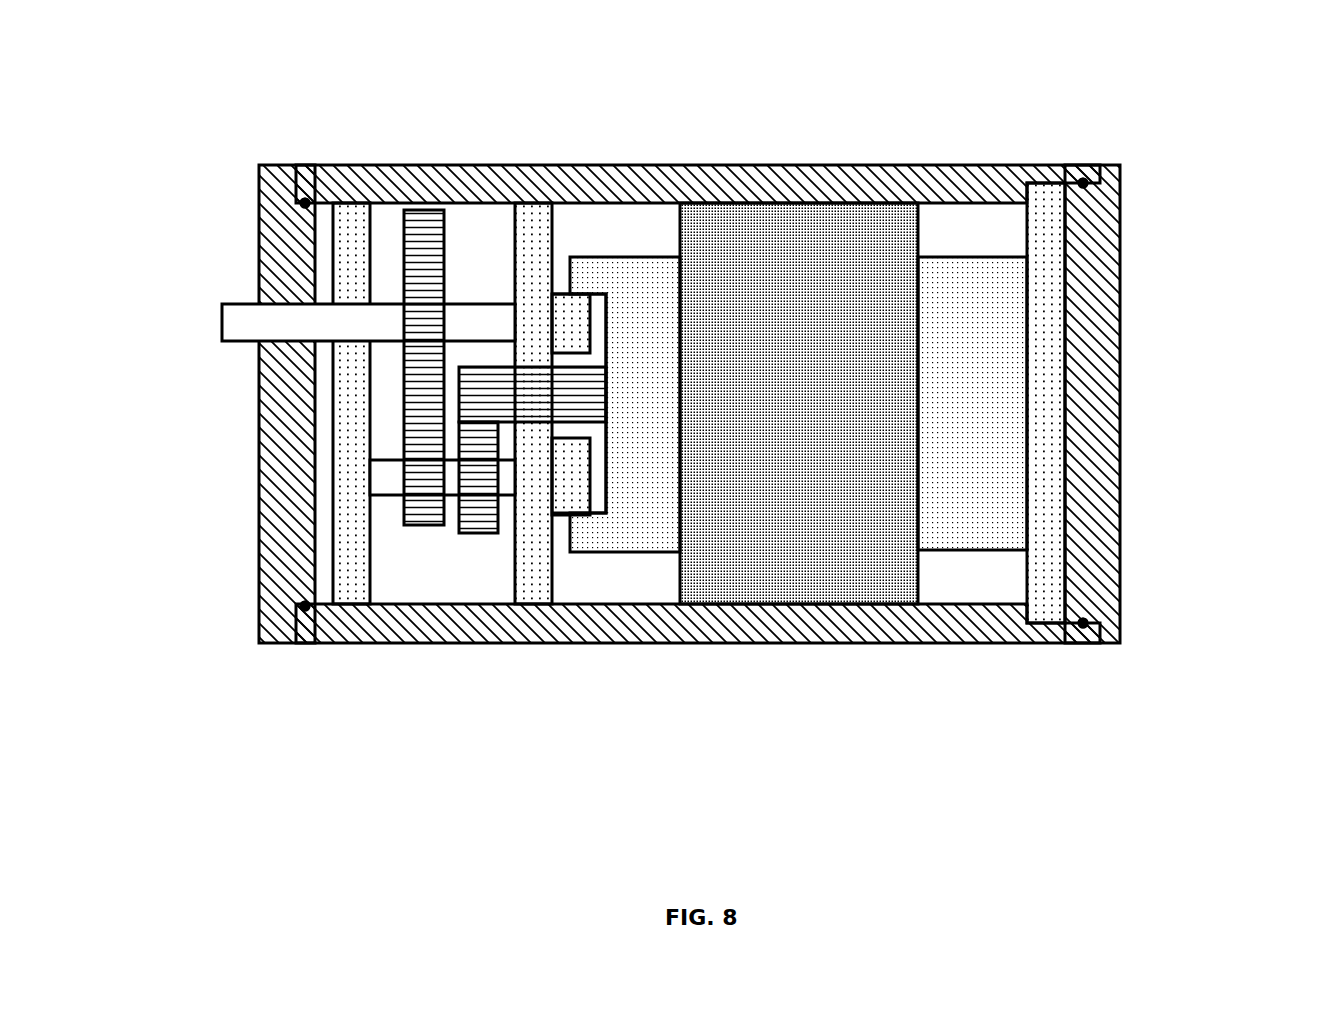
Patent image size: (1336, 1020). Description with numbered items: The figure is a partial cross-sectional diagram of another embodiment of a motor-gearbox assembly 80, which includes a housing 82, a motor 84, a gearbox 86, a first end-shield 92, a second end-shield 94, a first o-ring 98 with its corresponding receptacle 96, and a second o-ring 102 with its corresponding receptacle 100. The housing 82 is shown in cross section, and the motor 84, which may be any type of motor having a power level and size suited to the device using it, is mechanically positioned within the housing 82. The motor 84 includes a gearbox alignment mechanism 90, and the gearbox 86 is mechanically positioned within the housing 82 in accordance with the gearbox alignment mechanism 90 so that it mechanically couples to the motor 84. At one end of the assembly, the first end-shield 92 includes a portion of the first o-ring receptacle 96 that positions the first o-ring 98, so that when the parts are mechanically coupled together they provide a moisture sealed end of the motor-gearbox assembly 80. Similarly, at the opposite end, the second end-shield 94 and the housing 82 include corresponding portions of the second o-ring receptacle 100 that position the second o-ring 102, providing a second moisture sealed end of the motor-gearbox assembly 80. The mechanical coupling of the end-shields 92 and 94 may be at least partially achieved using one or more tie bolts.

The motor-gearbox assembly 80 is at (697, 424).
The housing 82 is at (514, 163).
The motor 84 is at (829, 236).
The gearbox 86 is at (421, 665).
The gearbox alignment mechanism 90 is at (590, 556).
The first end-shield 92 is at (1123, 496).
The second end-shield 94 is at (257, 459).
The first o-ring receptacle 96 is at (1335, 244).
The first o-ring 98 is at (1205, 403).
The second o-ring receptacle 100 is at (291, 217).
The second o-ring 102 is at (150, 331).